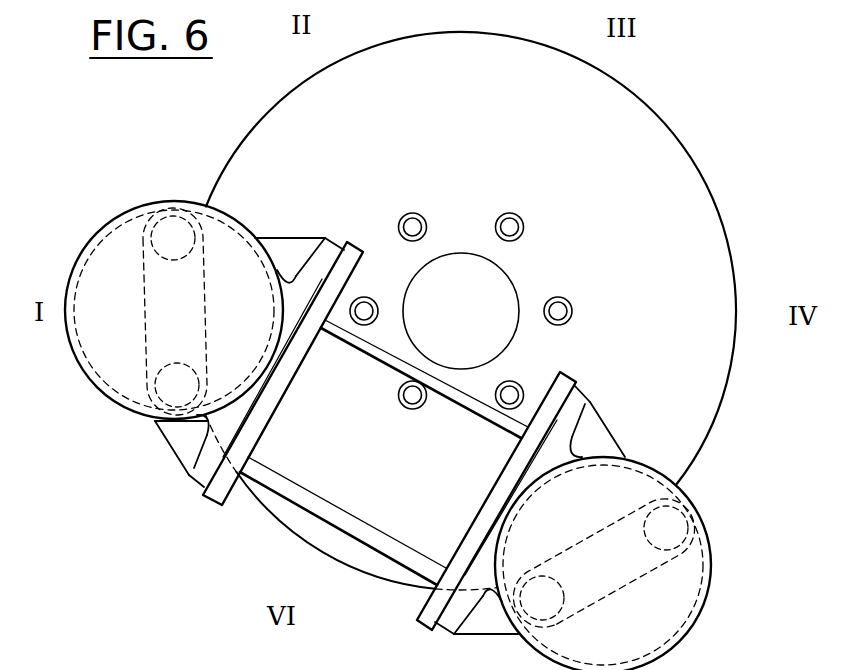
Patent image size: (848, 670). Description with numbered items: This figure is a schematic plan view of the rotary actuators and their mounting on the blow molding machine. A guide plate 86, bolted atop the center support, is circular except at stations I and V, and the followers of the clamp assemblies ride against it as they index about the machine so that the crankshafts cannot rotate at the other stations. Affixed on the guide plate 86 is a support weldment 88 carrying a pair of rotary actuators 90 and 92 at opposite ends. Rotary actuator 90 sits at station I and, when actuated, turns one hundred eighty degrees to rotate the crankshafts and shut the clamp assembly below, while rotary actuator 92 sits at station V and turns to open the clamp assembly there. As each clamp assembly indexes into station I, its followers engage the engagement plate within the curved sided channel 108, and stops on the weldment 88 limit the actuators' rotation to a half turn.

The guide plate 86 is at (701, 212).
The support weldment 88 is at (288, 490).
The rotary actuator 90 is at (127, 233).
The rotary actuator 92 is at (687, 590).
The curved sided channel 108 is at (148, 353).